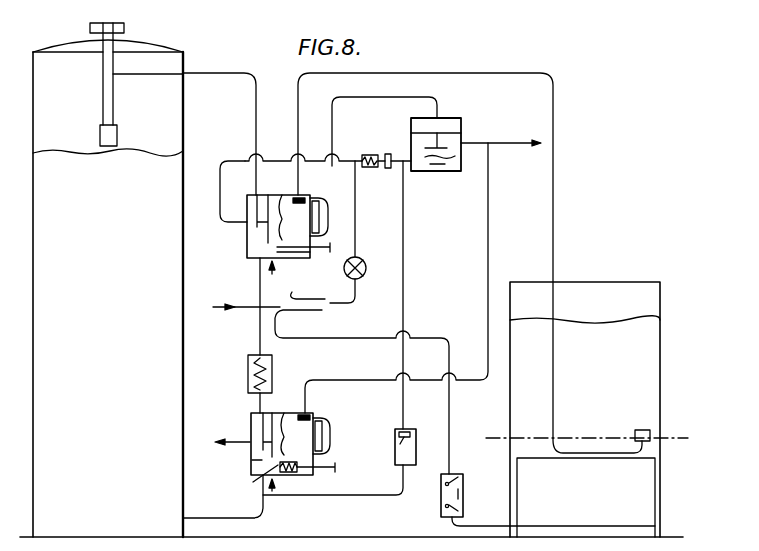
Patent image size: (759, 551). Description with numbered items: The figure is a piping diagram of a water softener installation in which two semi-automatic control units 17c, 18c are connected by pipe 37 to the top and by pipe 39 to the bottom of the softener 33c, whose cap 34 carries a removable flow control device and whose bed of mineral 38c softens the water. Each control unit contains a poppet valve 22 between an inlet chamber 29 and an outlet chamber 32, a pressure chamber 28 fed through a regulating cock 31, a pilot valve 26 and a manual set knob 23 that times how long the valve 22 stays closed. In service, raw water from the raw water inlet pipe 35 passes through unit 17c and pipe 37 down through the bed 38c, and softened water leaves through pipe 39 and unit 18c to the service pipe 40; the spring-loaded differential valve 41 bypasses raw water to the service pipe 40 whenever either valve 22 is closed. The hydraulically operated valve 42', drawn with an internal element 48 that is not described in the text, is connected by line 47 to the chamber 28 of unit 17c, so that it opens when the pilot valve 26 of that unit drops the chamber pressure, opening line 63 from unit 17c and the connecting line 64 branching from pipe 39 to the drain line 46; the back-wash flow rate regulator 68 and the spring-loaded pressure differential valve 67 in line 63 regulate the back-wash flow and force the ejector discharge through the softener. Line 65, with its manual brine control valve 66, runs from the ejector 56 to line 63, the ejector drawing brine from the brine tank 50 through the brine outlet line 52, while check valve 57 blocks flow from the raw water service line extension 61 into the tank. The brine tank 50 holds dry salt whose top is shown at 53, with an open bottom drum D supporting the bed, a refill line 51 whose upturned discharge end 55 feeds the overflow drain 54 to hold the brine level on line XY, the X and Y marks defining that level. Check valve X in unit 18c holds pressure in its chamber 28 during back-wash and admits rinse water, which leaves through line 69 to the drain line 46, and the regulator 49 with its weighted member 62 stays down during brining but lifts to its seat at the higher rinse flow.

The cap 34 is at (121, 22).
The bed of mineral 38c is at (50, 150).
The softener 33c is at (185, 132).
The pipe 37 is at (257, 110).
The line 47 is at (388, 97).
The float 48 is at (448, 132).
The hydraulically operated valve 42' is at (457, 142).
The drain line 46 is at (500, 147).
The line 63 is at (340, 160).
The back-wash flow rate regulator 68 is at (388, 153).
The spring-loaded pressure differential valve 67 is at (368, 168).
The chamber 32 is at (235, 191).
The pilot valve 26 is at (303, 197).
The manual set knob 23 is at (320, 217).
The chamber 28 is at (340, 450).
The poppet valve 22 is at (253, 228).
The chamber 29 is at (243, 257).
The control unit 17c is at (274, 268).
The regulating cock 31 is at (338, 246).
The line 65 is at (357, 228).
The manual brine control valve 66 is at (367, 266).
The connecting line 64 is at (405, 275).
The line 69 is at (490, 262).
The refill line 51 is at (555, 222).
The raw water service line extension 61 is at (268, 306).
The raw water inlet pipe 35 is at (242, 308).
The ejector 56 is at (305, 312).
The spring-loaded differential valve 41 is at (272, 368).
The top of the salt bed 53 is at (588, 320).
The brine tank 50 is at (663, 330).
The overflow drain 54 is at (640, 428).
The brine outlet line 52 is at (450, 405).
The upturned discharge end 55 is at (645, 443).
The open bottom drum D is at (657, 488).
The member 62 is at (398, 441).
The regulator 49 is at (418, 447).
The service pipe 40 is at (232, 444).
The check valve X is at (465, 463).
The brine level line Y is at (695, 441).
The control unit 18c is at (275, 486).
The pipe 39 is at (215, 513).
The check valve 57 is at (463, 493).